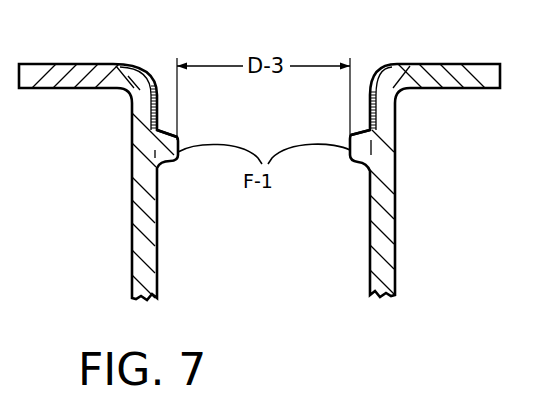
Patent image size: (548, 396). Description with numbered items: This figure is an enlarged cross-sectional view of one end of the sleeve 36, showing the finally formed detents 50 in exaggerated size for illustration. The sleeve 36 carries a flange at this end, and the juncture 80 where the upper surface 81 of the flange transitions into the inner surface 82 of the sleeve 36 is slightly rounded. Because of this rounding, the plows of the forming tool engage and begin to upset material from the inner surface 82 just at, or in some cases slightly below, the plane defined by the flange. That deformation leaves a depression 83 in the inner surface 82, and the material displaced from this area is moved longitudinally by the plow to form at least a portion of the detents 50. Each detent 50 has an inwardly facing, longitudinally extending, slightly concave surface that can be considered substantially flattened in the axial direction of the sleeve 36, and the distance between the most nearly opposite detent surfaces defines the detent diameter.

The juncture 80 is at (137, 65).
The upper surface of the flange 81 is at (80, 34).
The inner surface of the sleeve 82 is at (370, 237).
The depression 83 is at (156, 92).
The detents 50 is at (177, 146).
The sleeve 36 is at (539, 297).